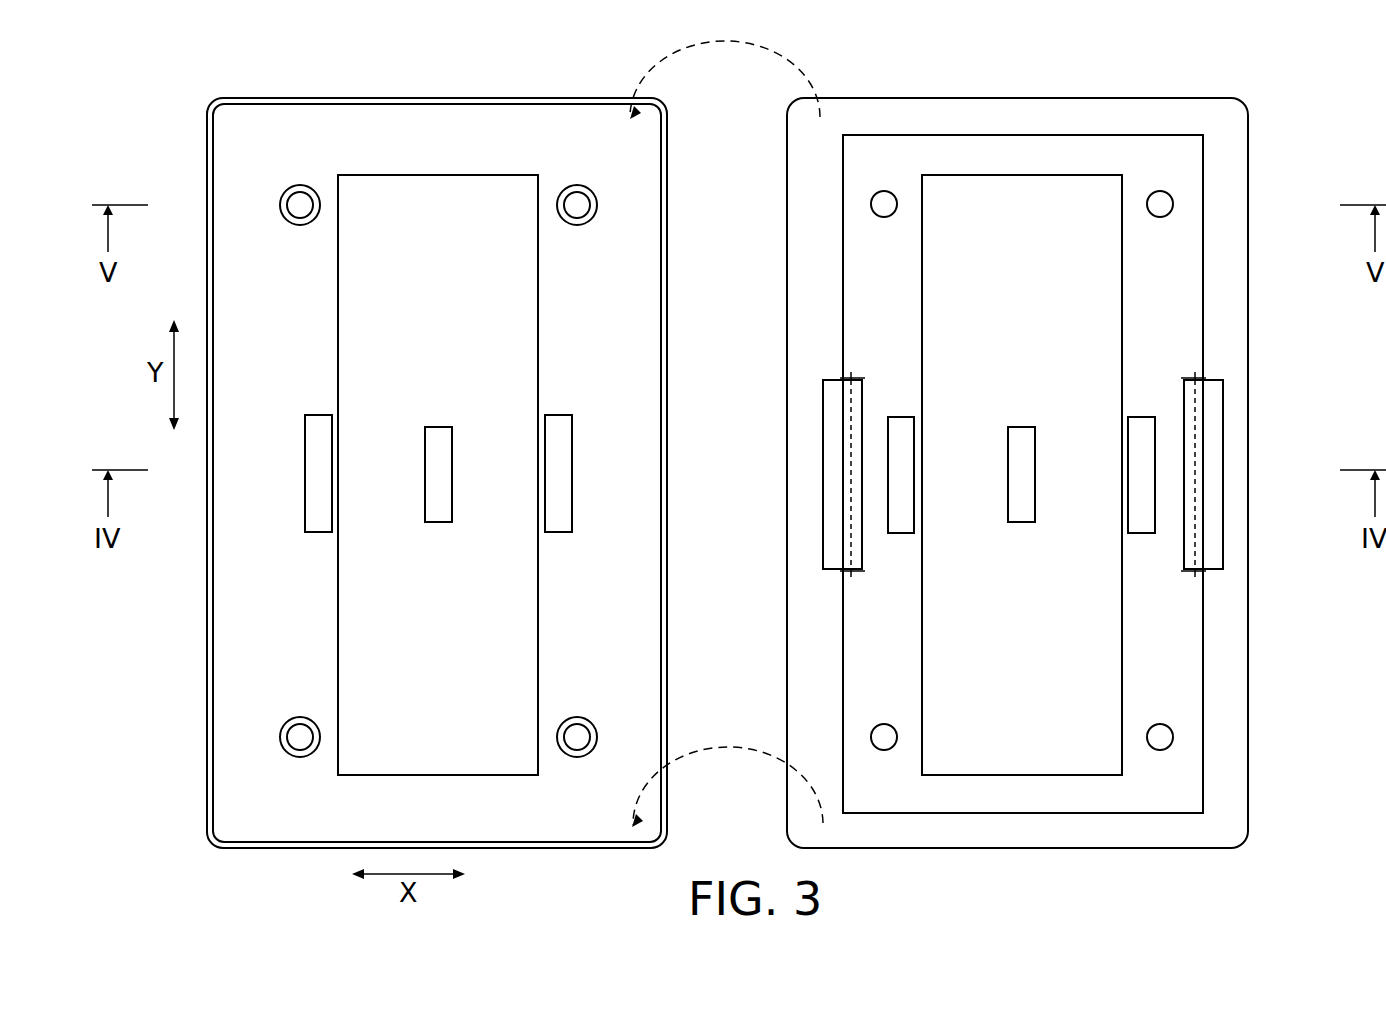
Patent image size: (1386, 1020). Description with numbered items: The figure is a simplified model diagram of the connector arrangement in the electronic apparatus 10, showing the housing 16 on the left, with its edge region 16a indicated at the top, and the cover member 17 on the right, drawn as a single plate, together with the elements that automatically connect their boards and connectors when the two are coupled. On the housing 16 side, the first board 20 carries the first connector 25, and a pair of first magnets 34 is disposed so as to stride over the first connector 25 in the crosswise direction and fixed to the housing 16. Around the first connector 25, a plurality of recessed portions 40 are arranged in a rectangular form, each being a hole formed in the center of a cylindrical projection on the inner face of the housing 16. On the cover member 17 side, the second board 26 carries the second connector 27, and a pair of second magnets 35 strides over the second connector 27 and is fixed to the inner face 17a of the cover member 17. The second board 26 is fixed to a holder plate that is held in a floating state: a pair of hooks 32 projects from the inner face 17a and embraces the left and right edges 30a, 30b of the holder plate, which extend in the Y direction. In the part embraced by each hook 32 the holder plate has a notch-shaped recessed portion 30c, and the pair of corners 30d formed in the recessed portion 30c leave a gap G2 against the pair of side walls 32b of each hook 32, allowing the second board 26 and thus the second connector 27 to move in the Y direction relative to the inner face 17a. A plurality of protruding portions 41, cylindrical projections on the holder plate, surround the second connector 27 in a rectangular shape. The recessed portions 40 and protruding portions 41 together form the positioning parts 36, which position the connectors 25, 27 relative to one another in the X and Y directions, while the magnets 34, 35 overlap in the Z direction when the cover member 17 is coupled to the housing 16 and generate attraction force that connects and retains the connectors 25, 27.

The electronic apparatus 10 is at (192, 62).
The housing 16 is at (274, 90).
The peripheral edge of cover member 16a is at (392, 103).
The cover member 17 is at (1044, 88).
The inner face of the cover member 17a is at (1108, 108).
The first board 20 is at (469, 166).
The first connector 25 is at (438, 524).
The second board 26 is at (960, 166).
The second connector 27 is at (1021, 524).
The left edge of the holder plate 30a is at (1205, 690).
The right edge of the holder plate 30b is at (840, 690).
The recessed portion of the holder plate 30c is at (843, 415).
The corners of the recessed portion 30d is at (847, 376).
The hooks 32 is at (828, 478).
The side walls of the hook 32b is at (843, 378).
The first magnets 34 is at (315, 534).
The second magnets 35 is at (901, 535).
The positioning parts 36 is at (741, 477).
The recessed portions 40 is at (298, 218).
The protruding portions 41 is at (884, 196).
The gap G2 is at (845, 377).